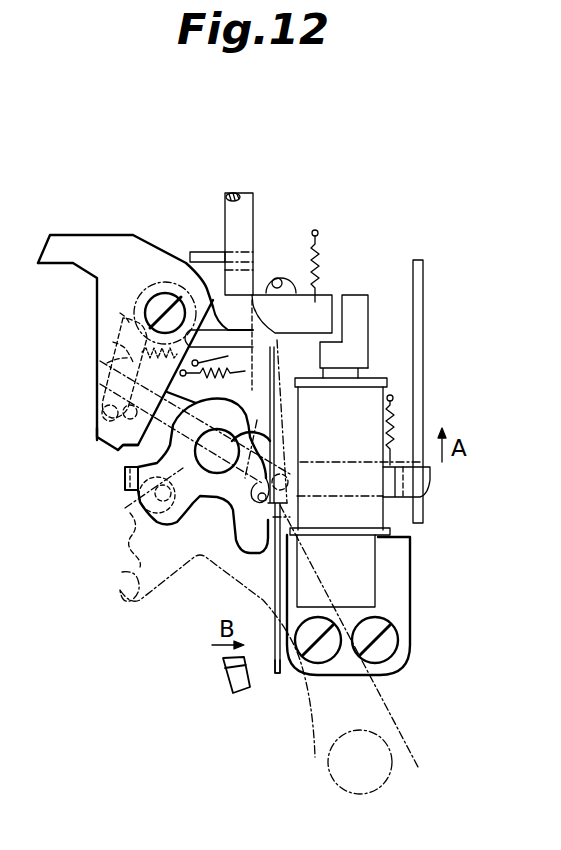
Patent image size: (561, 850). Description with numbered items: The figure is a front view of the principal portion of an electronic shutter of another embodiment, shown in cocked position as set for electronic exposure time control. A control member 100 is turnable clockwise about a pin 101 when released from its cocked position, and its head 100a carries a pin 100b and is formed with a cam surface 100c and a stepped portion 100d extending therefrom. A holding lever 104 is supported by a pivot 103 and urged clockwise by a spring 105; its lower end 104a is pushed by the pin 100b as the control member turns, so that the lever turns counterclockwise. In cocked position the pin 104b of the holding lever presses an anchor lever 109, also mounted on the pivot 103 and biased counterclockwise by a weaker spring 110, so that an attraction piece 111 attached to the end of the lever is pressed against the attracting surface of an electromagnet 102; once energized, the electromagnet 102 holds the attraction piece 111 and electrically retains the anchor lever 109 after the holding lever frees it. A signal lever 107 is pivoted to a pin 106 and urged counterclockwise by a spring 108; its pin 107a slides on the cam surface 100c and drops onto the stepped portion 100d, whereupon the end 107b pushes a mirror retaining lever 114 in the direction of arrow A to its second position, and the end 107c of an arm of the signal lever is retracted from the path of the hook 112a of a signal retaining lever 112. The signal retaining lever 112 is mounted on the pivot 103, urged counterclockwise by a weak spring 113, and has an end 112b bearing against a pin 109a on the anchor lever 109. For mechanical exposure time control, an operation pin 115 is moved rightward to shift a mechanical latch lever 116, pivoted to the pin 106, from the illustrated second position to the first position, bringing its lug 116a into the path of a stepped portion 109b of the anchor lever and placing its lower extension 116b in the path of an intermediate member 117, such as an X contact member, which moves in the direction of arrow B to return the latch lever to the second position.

The control member 100 is at (365, 707).
The head 100a is at (168, 590).
The pin 100b is at (288, 482).
The cam surface 100c is at (128, 526).
The stepped portion 100d is at (122, 570).
The pin 101 is at (383, 772).
The electromagnet 102 is at (368, 398).
The pivot 103 is at (160, 296).
The holding lever 104 is at (212, 275).
The lower end 104a is at (290, 518).
The pin 104b is at (277, 279).
The spring 105 is at (242, 352).
The pin 106 is at (230, 443).
The signal lever 107 is at (200, 533).
The pin 107a is at (130, 508).
The end 107b is at (428, 470).
The end of arm 107c is at (107, 363).
The spring 108 is at (390, 427).
The anchor lever 109 is at (110, 253).
The pin 109a is at (97, 432).
The stepped portion 109b is at (120, 452).
The spring 110 is at (323, 268).
The attraction piece 111 is at (360, 312).
The signal retaining lever 112 is at (120, 313).
The hook 112a is at (104, 395).
The end 112b is at (102, 410).
The spring 113 is at (113, 342).
The mirror retaining lever 114 is at (423, 305).
The operation pin 115 is at (253, 213).
The mechanical latch lever 116 is at (262, 407).
The lug 116a is at (125, 480).
The lower extension 116b is at (277, 676).
The intermediate member 117 is at (222, 680).